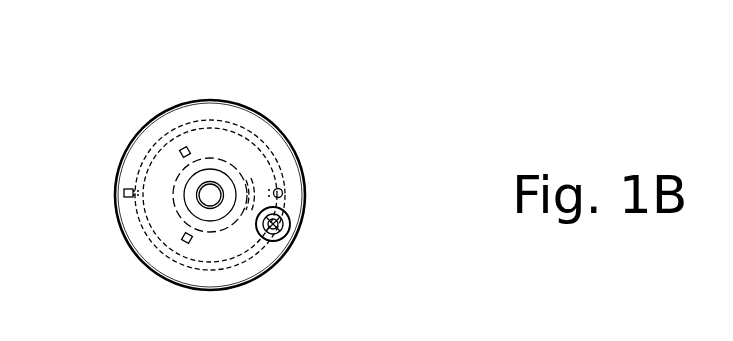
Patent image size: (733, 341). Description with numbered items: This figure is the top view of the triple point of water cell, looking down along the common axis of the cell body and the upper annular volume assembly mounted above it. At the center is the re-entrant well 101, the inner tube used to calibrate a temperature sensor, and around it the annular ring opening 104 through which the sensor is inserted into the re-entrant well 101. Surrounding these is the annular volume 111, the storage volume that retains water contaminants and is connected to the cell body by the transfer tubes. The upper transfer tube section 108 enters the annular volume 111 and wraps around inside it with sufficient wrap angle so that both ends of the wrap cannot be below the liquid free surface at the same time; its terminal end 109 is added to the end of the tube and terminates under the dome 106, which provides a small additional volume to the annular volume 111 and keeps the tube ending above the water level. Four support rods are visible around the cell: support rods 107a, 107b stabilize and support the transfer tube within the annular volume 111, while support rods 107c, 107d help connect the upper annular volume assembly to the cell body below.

The re-entrant well 101 is at (210, 192).
The annular ring opening 104 is at (234, 180).
The dome 106 is at (295, 230).
The support rod 107a is at (305, 192).
The support rod 107b is at (118, 195).
The support rod 107c is at (187, 242).
The support rod 107d is at (183, 148).
The upper transfer tube section 108 is at (275, 157).
The terminal end of upper transfer tube section 109 is at (293, 220).
The annular volume 111 is at (210, 280).